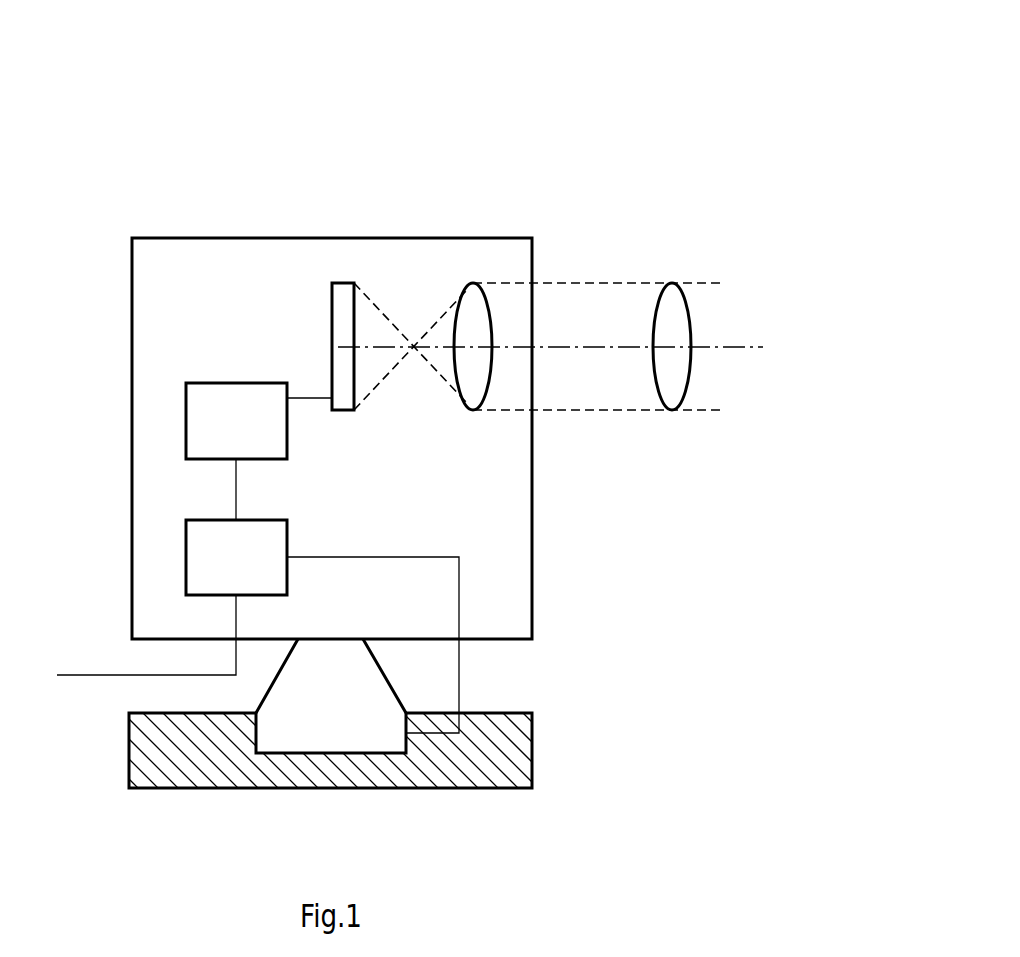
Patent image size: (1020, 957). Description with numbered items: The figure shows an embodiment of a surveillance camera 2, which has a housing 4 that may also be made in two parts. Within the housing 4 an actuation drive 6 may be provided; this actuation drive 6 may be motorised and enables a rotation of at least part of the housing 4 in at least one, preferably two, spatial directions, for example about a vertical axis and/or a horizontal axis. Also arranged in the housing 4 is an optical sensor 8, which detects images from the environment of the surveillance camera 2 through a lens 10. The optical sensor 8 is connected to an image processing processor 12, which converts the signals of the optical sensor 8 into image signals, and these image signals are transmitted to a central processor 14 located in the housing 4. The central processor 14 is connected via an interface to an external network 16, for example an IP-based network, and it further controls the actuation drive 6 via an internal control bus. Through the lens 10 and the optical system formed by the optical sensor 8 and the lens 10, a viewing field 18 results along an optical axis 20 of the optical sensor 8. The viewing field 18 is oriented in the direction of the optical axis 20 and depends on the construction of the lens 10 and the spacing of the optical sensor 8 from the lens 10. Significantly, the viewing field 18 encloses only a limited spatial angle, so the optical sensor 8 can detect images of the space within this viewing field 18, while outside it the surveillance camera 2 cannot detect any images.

The surveillance camera 2 is at (617, 89).
The housing 4 is at (533, 514).
The actuation drive 6 is at (322, 742).
The optical sensor 8 is at (338, 302).
The lens 10 is at (473, 300).
The image processing processor 12 is at (236, 451).
The central processor 14 is at (322, 626).
The external network 16 is at (93, 678).
The viewing field 18 is at (670, 296).
The optical axis 20 is at (745, 347).